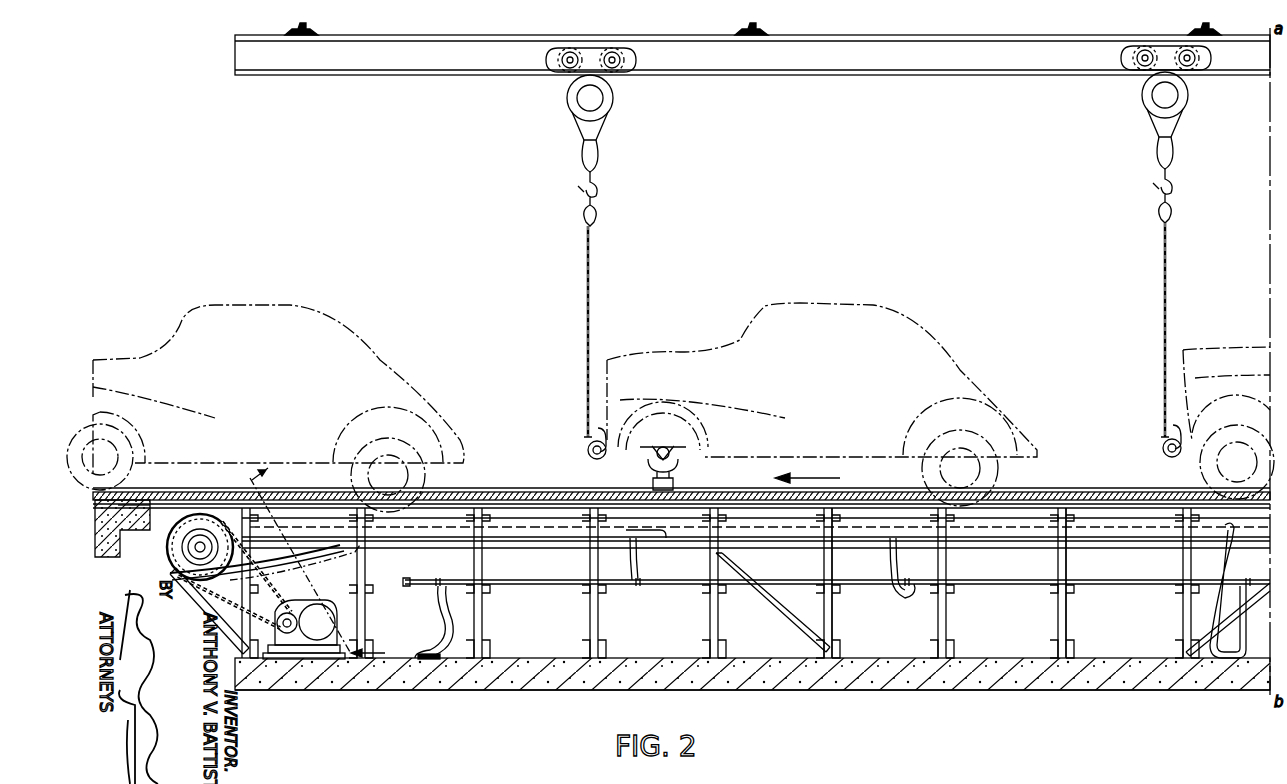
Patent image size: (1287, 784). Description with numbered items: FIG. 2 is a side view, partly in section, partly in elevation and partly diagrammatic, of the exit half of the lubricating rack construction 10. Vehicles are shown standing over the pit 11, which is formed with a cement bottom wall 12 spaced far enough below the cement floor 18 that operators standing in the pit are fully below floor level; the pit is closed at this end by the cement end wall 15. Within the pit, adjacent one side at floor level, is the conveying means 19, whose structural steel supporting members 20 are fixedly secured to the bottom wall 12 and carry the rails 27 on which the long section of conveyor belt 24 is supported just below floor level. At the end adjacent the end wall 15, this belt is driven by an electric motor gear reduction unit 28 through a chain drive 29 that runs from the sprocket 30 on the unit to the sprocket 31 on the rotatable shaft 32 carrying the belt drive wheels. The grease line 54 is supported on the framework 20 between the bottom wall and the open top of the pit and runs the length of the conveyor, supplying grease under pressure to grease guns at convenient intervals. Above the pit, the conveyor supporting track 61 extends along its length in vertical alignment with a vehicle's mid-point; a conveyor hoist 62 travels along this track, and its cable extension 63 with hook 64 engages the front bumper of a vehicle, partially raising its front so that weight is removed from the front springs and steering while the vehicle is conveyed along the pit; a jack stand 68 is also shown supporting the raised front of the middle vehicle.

The car washing apparatus 10 is at (307, 557).
The pit 11 is at (540, 650).
The cement bottom wall 12 is at (383, 690).
The cement end wall 15 is at (102, 558).
The cement floor 18 is at (120, 505).
The conveying means 19 is at (840, 564).
The structural steel supporting members 20 is at (705, 622).
The long section of conveyor belt 24 is at (1121, 478).
The rails 27 is at (1098, 515).
The electric motor gear reduction unit 28 is at (300, 640).
The chain drive 29 is at (185, 592).
The sprocket 30 is at (284, 612).
The sprocket 31 is at (182, 548).
The rotatable shaft 32 is at (200, 535).
The grease line 54 is at (522, 582).
The conveyor supporting track 61 is at (317, 72).
The conveyor hoist 62 is at (605, 98).
The cable extension 63 is at (588, 313).
The hook 64 is at (588, 450).
The jack stand 68 is at (653, 480).